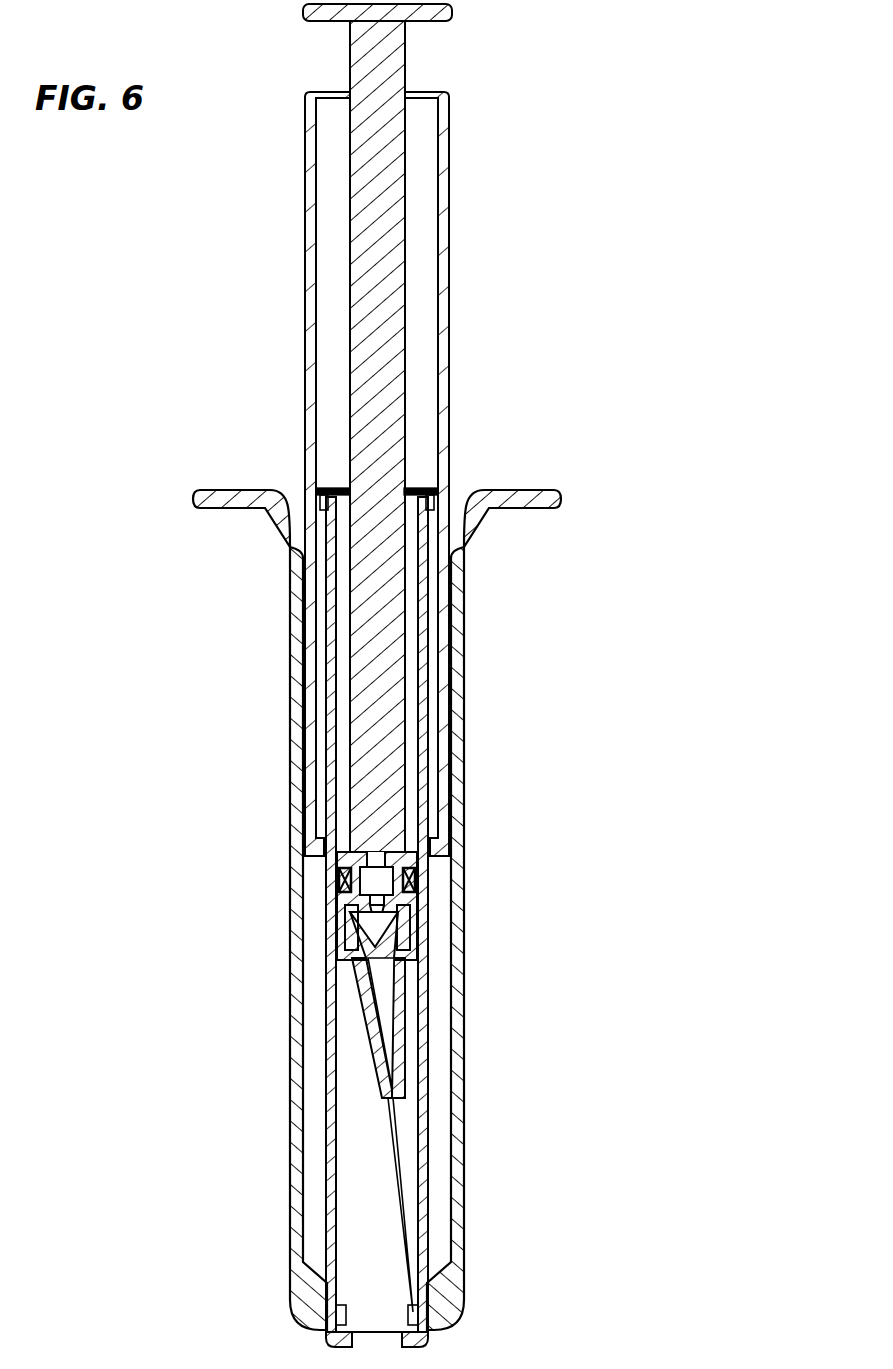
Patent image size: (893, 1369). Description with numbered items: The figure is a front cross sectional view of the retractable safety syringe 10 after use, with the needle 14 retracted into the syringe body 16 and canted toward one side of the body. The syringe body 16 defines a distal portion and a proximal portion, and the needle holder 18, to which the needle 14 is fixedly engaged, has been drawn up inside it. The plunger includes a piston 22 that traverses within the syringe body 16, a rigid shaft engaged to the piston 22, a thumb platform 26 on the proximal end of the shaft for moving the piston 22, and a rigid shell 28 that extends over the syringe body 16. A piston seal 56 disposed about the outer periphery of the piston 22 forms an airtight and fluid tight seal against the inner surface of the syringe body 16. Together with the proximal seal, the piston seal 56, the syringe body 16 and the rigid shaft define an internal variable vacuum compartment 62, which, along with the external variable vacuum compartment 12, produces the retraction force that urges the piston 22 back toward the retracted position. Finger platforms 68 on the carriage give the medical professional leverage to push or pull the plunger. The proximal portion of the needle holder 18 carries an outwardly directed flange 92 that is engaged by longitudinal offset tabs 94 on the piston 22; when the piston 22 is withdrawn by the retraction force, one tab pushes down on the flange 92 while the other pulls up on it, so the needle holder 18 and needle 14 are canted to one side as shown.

The retractable safety syringe 10 is at (160, 281).
The external variable vacuum compartment 12 is at (315, 700).
The needle 14 is at (407, 1160).
The syringe body 16 is at (425, 705).
The needle holder 18 is at (410, 1010).
The piston 22 is at (408, 853).
The thumb platform 26 is at (452, 12).
The rigid shell 28 is at (464, 606).
The piston seal 56 is at (416, 878).
The internal variable vacuum compartment 62 is at (346, 630).
The finger platforms 68 is at (545, 490).
The outwardly directed flange 92 is at (398, 912).
The longitudinal offset tabs 94 is at (320, 900).